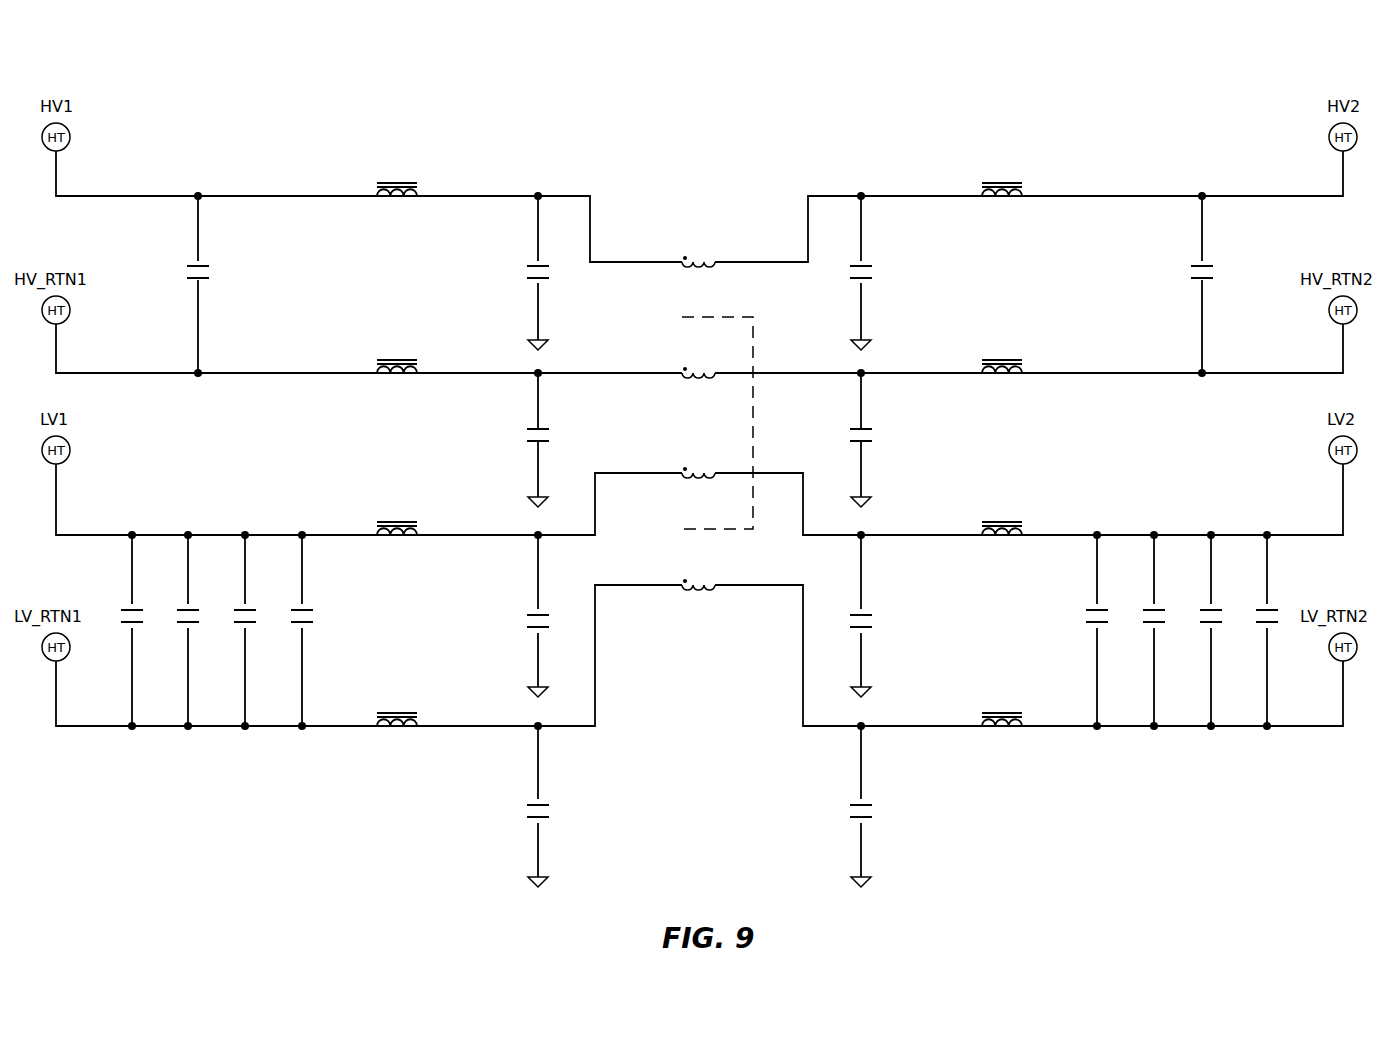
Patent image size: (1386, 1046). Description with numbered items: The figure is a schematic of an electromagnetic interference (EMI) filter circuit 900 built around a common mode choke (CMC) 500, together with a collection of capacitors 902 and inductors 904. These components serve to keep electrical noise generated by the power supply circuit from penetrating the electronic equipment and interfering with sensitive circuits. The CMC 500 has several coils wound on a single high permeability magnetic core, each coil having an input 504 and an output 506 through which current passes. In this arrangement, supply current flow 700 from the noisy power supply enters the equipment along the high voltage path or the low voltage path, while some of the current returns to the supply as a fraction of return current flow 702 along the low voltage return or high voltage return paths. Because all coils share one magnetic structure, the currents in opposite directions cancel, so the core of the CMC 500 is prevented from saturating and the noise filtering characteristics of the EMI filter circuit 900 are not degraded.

The electromagnetic interference (EMI) filter circuit 900 is at (1275, 88).
The common mode choke (CMC) 500 is at (768, 200).
The input 504 is at (660, 262).
The output 506 is at (740, 262).
The supply current flow 700 is at (1327, 168).
The return current flow 702 is at (40, 707).
The capacitors 902 is at (205, 267).
The inductors 904 is at (408, 214).